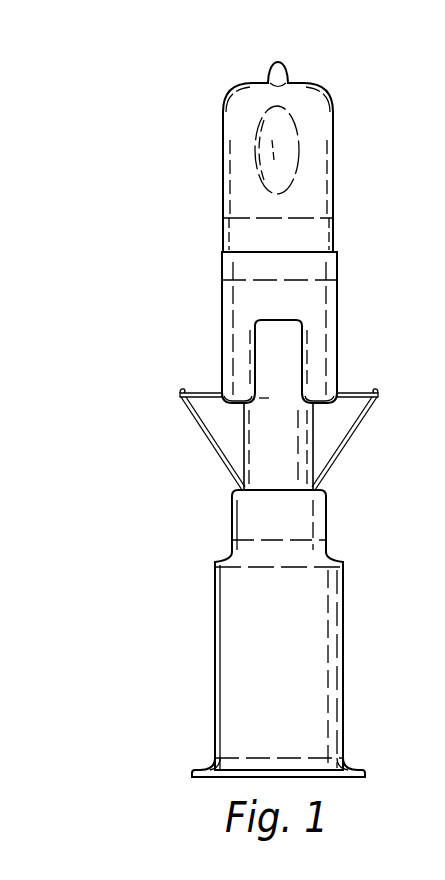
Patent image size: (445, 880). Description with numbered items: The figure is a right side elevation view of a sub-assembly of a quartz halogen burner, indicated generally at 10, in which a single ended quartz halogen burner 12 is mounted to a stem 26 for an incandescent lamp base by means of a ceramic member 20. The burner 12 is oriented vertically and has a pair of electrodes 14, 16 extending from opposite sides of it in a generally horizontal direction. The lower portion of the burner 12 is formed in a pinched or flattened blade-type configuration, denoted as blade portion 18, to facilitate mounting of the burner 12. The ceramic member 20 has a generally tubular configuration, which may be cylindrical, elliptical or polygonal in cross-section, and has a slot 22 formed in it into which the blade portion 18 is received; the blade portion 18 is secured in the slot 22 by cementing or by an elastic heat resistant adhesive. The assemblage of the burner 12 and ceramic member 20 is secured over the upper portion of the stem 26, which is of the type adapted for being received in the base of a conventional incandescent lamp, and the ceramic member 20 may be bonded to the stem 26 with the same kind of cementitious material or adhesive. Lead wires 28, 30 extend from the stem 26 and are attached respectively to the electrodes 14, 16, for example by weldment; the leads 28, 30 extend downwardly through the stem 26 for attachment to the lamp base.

The sub-assembly of a quartz halogen burner 10 is at (202, 625).
The single ended quartz halogen burner 12 is at (257, 97).
The electrode 14 is at (207, 392).
The electrode 16 is at (357, 392).
The blade portion 18 is at (238, 322).
The ceramic member 20 is at (265, 457).
The slot 22 is at (299, 358).
The stem 26 is at (262, 701).
The lead wire 28 is at (196, 443).
The lead wire 30 is at (348, 441).